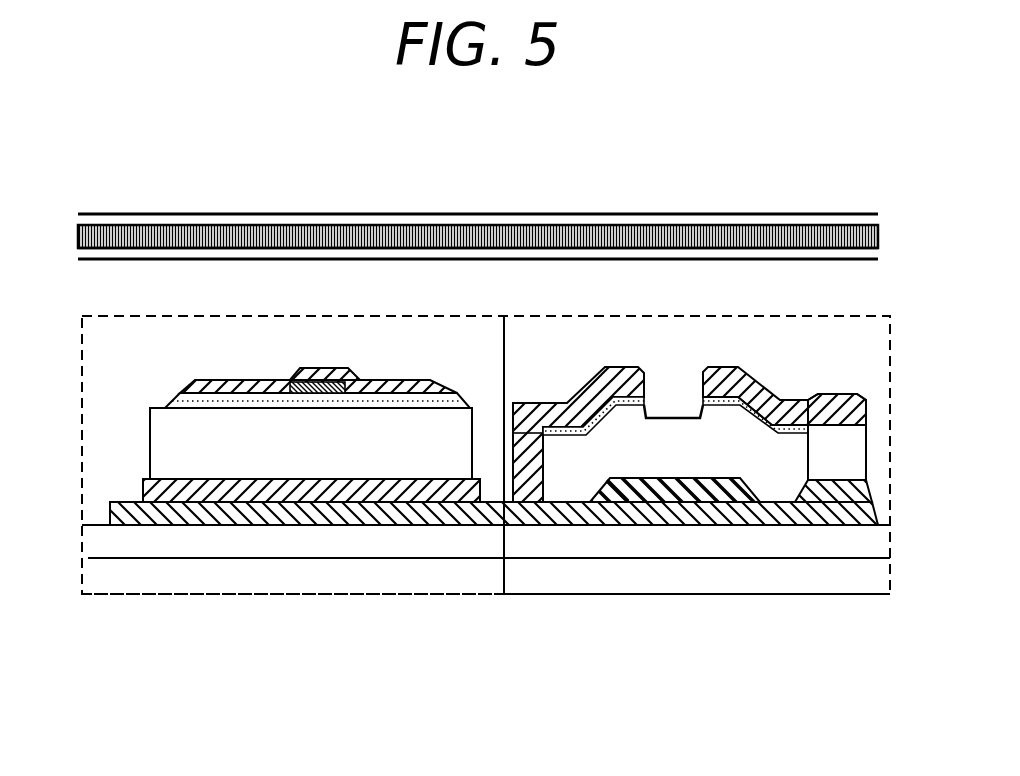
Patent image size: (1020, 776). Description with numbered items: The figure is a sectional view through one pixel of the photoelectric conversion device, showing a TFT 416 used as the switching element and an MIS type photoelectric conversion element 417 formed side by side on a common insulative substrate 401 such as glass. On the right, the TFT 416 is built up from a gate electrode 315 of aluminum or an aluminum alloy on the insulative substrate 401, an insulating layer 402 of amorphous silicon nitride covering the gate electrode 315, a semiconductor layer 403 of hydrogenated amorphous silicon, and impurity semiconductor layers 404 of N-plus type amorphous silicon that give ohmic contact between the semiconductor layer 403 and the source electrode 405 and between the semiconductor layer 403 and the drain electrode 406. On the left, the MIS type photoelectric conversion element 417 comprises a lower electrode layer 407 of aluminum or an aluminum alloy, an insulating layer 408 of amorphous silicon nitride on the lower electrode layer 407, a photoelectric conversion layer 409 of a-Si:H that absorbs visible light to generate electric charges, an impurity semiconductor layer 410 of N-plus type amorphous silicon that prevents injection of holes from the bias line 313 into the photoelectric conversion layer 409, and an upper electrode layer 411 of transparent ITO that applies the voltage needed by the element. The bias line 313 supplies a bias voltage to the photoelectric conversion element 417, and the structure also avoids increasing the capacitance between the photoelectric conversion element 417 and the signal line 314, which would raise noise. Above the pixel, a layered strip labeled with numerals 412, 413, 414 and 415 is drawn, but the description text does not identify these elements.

The bias line 313 is at (332, 382).
The signal line 314 is at (845, 395).
The gate electrode 315 is at (620, 520).
The insulative substrate 401 is at (432, 546).
The insulating layer 402 is at (657, 500).
The semiconductor layer 403 is at (700, 462).
The impurity semiconductor layers 404 is at (643, 396).
The source electrode 405 is at (600, 378).
The drain electrode 406 is at (740, 373).
The lower electrode layer 407 is at (258, 515).
The insulating layer 408 is at (330, 490).
The photoelectric conversion layer 409 is at (152, 445).
The impurity semiconductor layer 410 is at (267, 382).
The upper electrode layer 411 is at (210, 382).
The counter substrate 412 is at (676, 276).
The counter electrode 413 is at (607, 244).
The color filter layer 414 is at (523, 240).
The protective film 415 is at (440, 216).
The TFT 416 is at (826, 594).
The MIS type photoelectric conversion element 417 is at (128, 596).